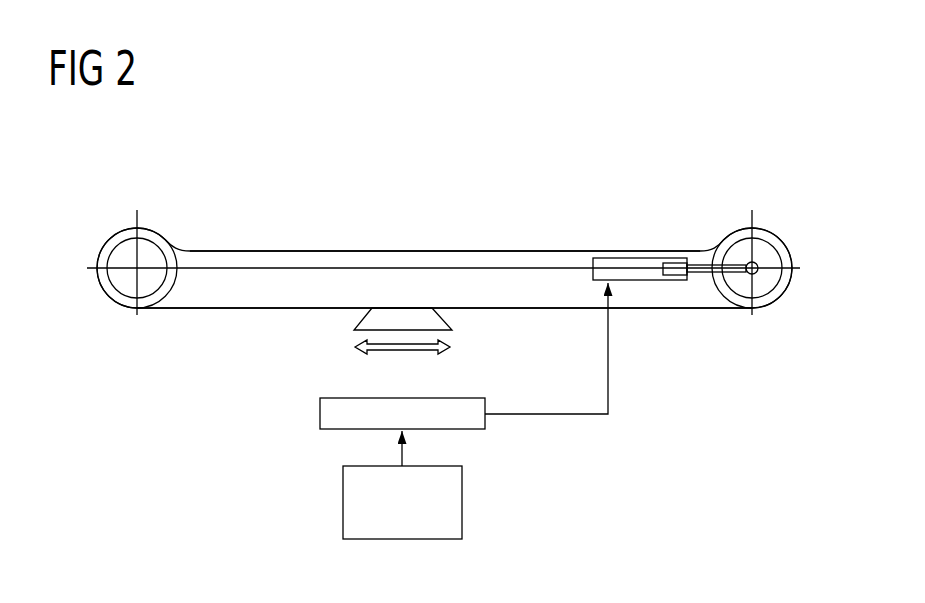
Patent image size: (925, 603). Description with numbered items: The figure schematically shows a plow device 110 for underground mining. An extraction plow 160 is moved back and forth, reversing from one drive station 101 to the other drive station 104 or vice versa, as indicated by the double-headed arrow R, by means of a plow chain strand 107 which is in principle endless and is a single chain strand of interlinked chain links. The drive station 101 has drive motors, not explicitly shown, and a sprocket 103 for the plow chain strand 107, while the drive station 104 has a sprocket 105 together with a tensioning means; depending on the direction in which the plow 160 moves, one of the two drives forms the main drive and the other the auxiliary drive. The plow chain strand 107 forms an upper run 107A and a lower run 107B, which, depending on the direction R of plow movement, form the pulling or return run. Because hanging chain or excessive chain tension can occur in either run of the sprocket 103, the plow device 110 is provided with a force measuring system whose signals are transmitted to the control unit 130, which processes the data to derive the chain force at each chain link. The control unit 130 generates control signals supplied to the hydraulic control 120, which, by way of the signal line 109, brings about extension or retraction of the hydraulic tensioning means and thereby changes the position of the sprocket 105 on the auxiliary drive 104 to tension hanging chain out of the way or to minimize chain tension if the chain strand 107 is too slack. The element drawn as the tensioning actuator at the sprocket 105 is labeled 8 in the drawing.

The drive station 101 is at (112, 220).
The sprocket 103 is at (157, 278).
The drive station 104 is at (769, 226).
The sprocket 105 is at (765, 283).
The plow chain strand 107 is at (511, 247).
The upper run 107A is at (369, 250).
The lower run 107B is at (287, 309).
The plow device 110 is at (466, 199).
The hydraulic control 120 is at (320, 414).
The control unit 130 is at (343, 505).
The extraction plow 160 is at (452, 318).
The actuator 8 is at (637, 272).
The signal line 109 is at (552, 414).
The direction of plow movement R is at (398, 350).